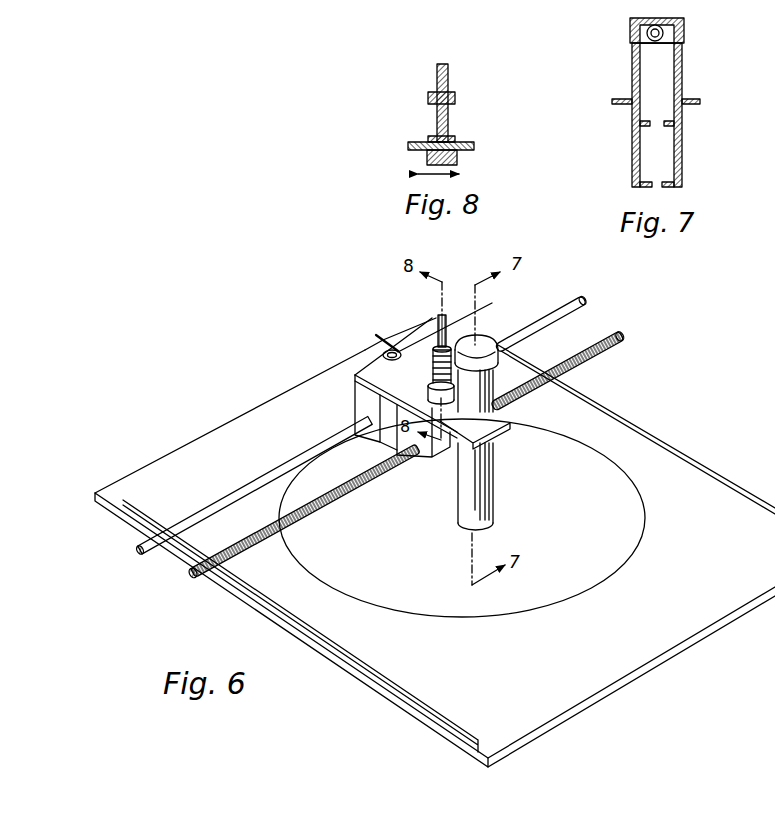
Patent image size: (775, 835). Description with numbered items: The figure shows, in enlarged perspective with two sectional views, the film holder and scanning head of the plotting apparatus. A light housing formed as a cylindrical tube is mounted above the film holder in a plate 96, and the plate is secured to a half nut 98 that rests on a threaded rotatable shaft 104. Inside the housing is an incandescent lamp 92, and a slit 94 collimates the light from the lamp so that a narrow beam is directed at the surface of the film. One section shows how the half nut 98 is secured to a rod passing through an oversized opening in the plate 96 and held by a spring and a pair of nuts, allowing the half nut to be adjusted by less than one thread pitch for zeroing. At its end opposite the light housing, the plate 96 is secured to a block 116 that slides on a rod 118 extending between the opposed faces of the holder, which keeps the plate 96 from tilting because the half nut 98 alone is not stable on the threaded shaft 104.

In FIG. 7, the incandescent lamp 92 is at (666, 33).
In FIG. 7, the slit 94 is at (683, 125).
In FIG. 8, the plate 96 is at (474, 141).
In FIG. 8, the half nut 98 is at (427, 153).
In FIG. 6, the threaded rotatable shaft 104 is at (608, 344).
In FIG. 6, the block 116 is at (366, 397).
In FIG. 6, the rod 118 is at (258, 480).